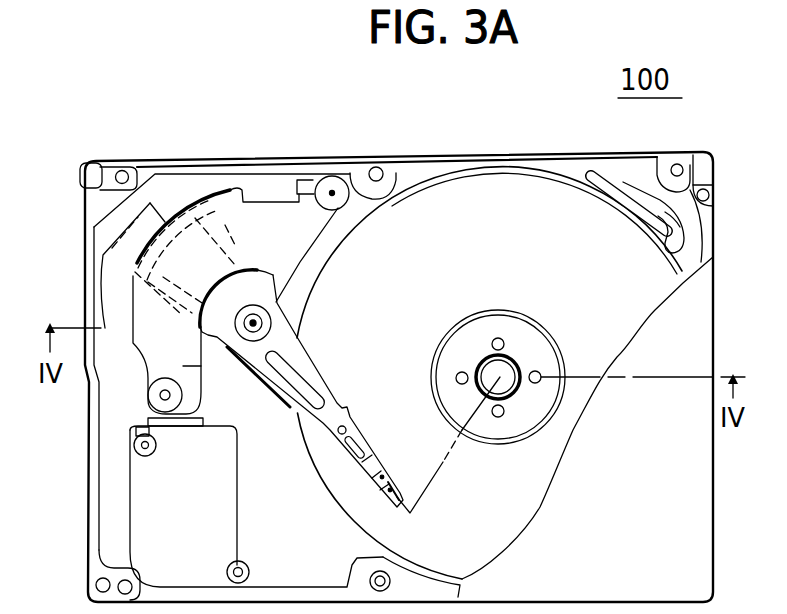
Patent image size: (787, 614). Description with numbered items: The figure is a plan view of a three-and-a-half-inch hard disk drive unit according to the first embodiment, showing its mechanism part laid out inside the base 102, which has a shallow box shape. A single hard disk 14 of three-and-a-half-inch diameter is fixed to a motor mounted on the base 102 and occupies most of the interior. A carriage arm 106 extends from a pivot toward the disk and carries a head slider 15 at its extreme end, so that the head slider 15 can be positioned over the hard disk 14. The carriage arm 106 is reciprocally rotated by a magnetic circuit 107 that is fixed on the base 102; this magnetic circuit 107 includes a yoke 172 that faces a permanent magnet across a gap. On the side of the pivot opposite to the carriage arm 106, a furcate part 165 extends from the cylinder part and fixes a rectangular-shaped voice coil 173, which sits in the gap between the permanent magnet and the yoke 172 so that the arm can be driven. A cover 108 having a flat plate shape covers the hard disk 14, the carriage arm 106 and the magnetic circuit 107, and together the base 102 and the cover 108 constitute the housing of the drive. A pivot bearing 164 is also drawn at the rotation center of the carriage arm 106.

The base 102 is at (100, 472).
The hard disk 14 is at (517, 185).
The head slider 15 is at (409, 521).
The carriage arm 106 is at (306, 369).
The magnetic circuit 107 is at (257, 193).
The cover 108 is at (622, 345).
The pivot bearing 164 is at (277, 303).
The furcate part 165 is at (275, 223).
The yoke 172 is at (278, 175).
The voice coil 173 is at (205, 207).